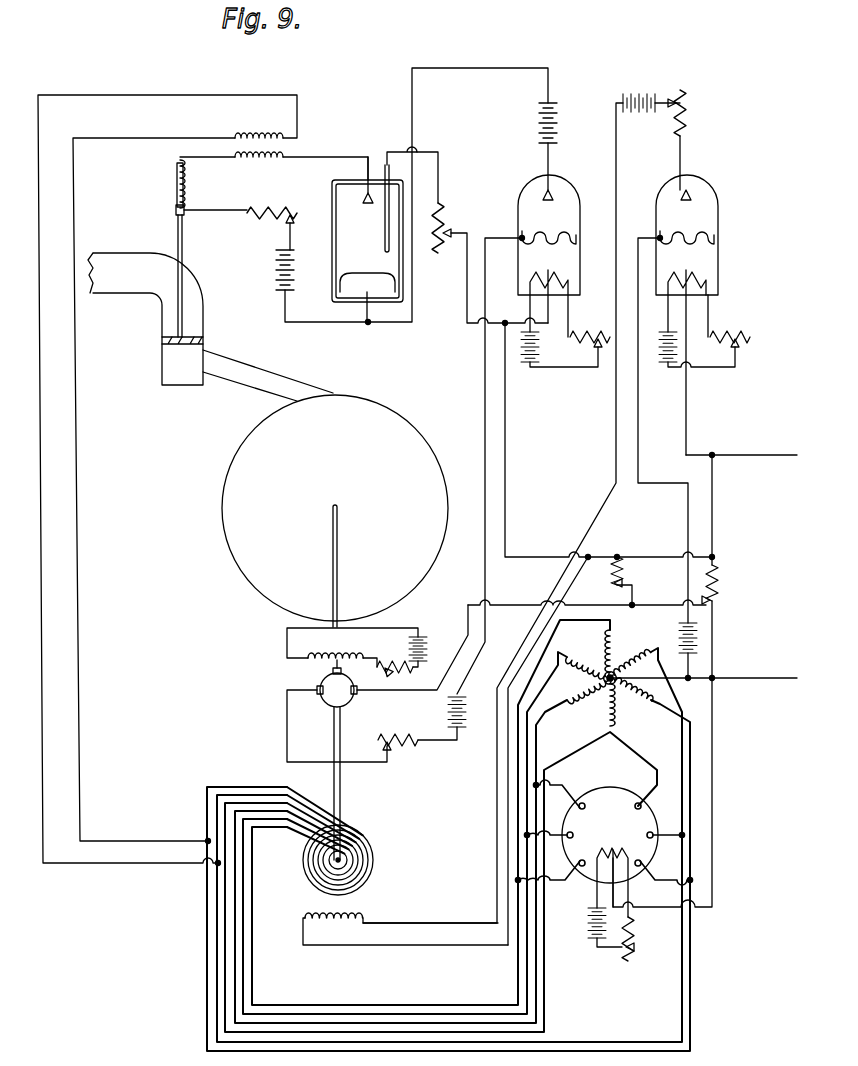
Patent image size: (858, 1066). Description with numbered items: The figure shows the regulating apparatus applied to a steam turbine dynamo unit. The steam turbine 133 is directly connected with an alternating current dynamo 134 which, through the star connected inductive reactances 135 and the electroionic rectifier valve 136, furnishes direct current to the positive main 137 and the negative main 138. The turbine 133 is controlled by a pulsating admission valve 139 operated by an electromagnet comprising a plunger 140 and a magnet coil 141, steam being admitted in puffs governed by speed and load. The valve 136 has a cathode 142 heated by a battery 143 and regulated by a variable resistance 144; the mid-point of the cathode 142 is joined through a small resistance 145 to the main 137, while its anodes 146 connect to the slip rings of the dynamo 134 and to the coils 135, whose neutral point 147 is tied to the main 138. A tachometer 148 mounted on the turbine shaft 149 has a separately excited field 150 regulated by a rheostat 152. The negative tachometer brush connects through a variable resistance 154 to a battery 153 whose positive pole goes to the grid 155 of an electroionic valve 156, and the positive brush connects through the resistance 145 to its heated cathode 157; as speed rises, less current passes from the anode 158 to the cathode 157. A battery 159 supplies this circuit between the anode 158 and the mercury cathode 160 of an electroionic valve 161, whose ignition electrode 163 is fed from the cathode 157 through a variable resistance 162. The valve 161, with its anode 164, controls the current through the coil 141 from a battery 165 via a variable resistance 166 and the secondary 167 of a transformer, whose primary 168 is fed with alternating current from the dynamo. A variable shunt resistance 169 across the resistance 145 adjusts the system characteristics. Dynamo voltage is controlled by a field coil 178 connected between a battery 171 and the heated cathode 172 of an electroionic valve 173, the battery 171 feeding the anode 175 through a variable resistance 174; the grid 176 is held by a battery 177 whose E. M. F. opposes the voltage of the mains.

The steam turbine 133 is at (253, 568).
The alternating current dynamo 134 is at (374, 868).
The inductive reactances 135 is at (578, 671).
The electroionic rectifier valve 136 is at (610, 786).
The positive main 137 is at (765, 456).
The negative main 138 is at (777, 680).
The pulsating admission valve 139 is at (177, 340).
The plunger 140 is at (175, 211).
The magnet coil 141 is at (170, 179).
The cathode 142 is at (613, 845).
The battery 143 is at (588, 923).
The variable resistance 144 is at (636, 939).
The small resistance 145 is at (718, 583).
The anodes 146 is at (572, 832).
The neutral point 147 is at (618, 698).
The tachometer 148 is at (331, 708).
The turbine shaft 149 is at (342, 786).
The separately excited field 150 is at (347, 647).
The rheostat 152 is at (396, 676).
The battery 153 is at (450, 714).
The variable resistance 154 is at (399, 757).
The grid 155 is at (550, 228).
The electroionic valve 156 is at (577, 188).
The heated cathode 157 is at (524, 266).
The anode 158 is at (543, 194).
The battery 159 is at (537, 122).
The mercury cathode 160 is at (387, 292).
The electroionic valve 161 is at (373, 176).
The variable resistance 162 is at (450, 215).
The ignition electrode 163 is at (384, 251).
The anode 164 is at (365, 206).
The battery 165 is at (278, 272).
The variable resistance 166 is at (272, 208).
The secondary 167 is at (260, 162).
The primary 168 is at (258, 130).
The variable shunt resistance 169 is at (611, 584).
The battery 171 is at (633, 100).
The heated cathode 172 is at (692, 268).
The electroionic valve 173 is at (720, 291).
The variable resistance 174 is at (690, 112).
The anode 175 is at (692, 196).
The grid 176 is at (702, 235).
The battery 177 is at (697, 636).
The field coil 178 is at (318, 912).